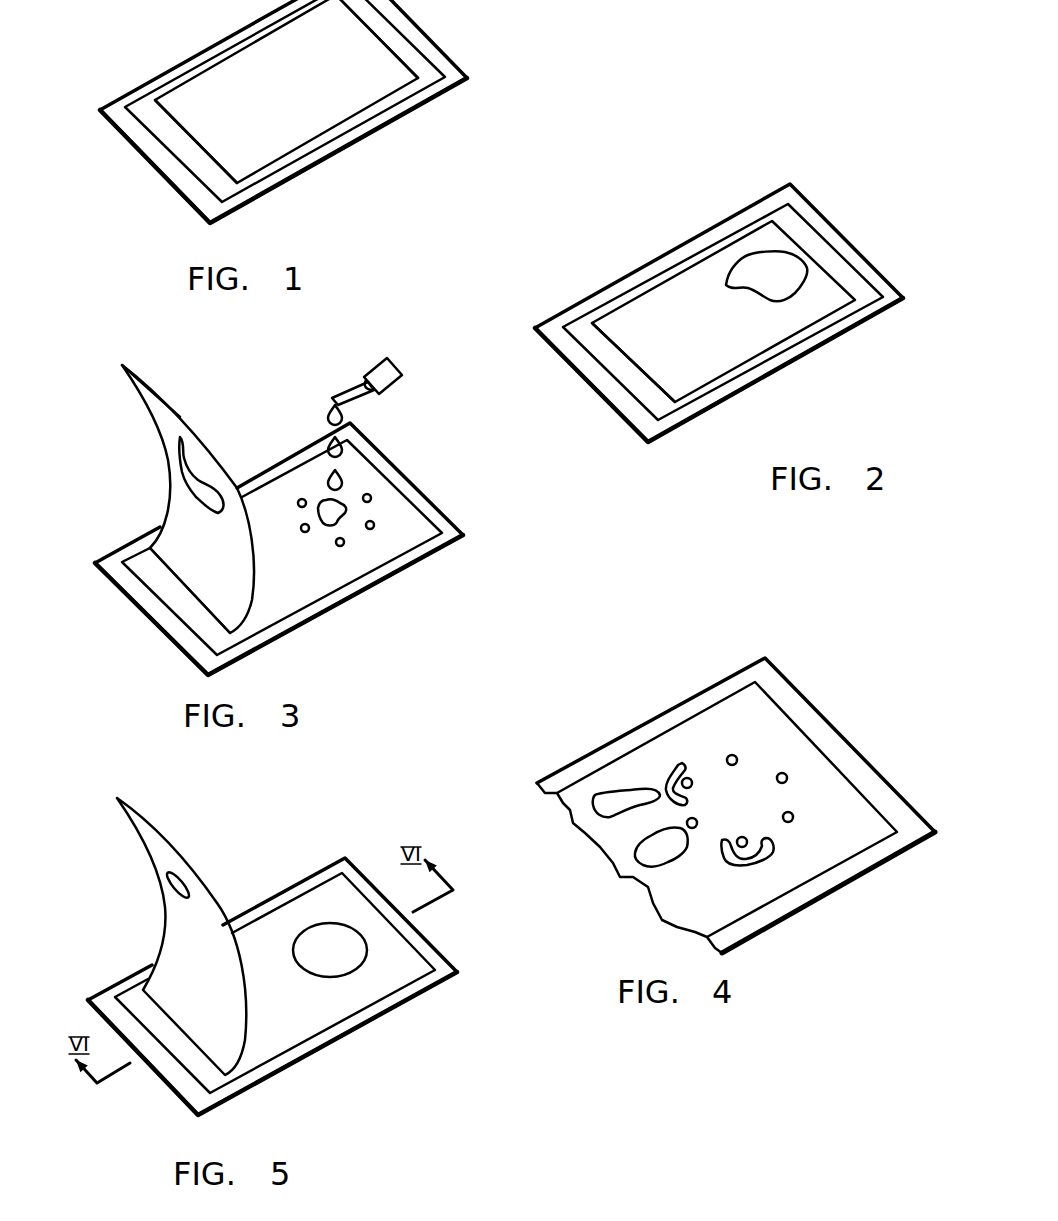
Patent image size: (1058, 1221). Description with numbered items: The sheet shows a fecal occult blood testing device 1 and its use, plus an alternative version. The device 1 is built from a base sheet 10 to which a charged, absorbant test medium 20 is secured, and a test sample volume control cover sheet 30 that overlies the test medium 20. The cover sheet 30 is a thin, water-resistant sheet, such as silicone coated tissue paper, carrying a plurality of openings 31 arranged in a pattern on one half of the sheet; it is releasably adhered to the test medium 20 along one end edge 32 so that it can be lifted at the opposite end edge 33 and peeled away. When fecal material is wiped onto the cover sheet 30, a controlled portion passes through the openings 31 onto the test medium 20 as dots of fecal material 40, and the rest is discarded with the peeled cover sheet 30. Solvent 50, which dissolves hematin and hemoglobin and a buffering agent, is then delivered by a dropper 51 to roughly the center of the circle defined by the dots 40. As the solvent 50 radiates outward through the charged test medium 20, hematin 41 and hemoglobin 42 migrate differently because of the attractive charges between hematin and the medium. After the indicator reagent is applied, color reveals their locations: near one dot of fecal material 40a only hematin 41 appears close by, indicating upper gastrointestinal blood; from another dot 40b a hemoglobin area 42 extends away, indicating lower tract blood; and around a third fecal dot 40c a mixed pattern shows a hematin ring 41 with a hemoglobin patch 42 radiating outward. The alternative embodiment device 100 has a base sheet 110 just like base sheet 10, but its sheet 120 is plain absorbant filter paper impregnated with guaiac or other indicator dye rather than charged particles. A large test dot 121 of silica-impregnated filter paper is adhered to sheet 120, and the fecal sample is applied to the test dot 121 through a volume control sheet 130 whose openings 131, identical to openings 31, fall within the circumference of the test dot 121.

In FIG. 1, the fecal occult blood testing device 1 is at (335, 168).
In FIG. 2, the fecal occult blood testing device 1 is at (770, 388).
In FIG. 3, the fecal occult blood testing device 1 is at (333, 630).
In FIG. 1, the base sheet 10 is at (390, 115).
In FIG. 2, the base sheet 10 is at (828, 335).
In FIG. 3, the base sheet 10 is at (433, 502).
In FIG. 1, the test medium 20 is at (340, 130).
In FIG. 2, the test medium 20 is at (777, 348).
In FIG. 3, the test medium 20 is at (273, 590).
In FIG. 1, the volume control cover sheet 30 is at (256, 100).
In FIG. 2, the volume control cover sheet 30 is at (658, 354).
In FIG. 3, the volume control cover sheet 30 is at (180, 503).
In FIG. 3, the openings 31 is at (182, 437).
In FIG. 1, the end edge 32 is at (280, 140).
In FIG. 2, the end edge 32 is at (718, 358).
In FIG. 3, the end edge 32 is at (227, 588).
In FIG. 1, the end edge 33 is at (387, 85).
In FIG. 2, the end edge 33 is at (823, 295).
In FIG. 3, the end edge 33 is at (168, 412).
In FIG. 3, the dots of fecal material 40 is at (342, 545).
In FIG. 4, the dots of fecal material 40 is at (794, 815).
In FIG. 4, the dot of fecal material 40a is at (747, 838).
In FIG. 4, the dot of fecal material 40b is at (697, 820).
In FIG. 4, the fecal dot 40c is at (689, 779).
In FIG. 4, the hematin 41 is at (676, 775).
In FIG. 4, the hemoglobin 42 is at (610, 805).
In FIG. 3, the solvent 50 is at (345, 417).
In FIG. 3, the dropper 51 is at (393, 380).
In FIG. 5, the alternative embodiment device 100 is at (323, 1082).
In FIG. 5, the base sheet 110 is at (368, 1023).
In FIG. 5, the sheet 120 is at (397, 968).
In FIG. 5, the test dot 121 is at (325, 944).
In FIG. 5, the volume control sheet 130 is at (172, 853).
In FIG. 5, the openings 131 is at (177, 895).